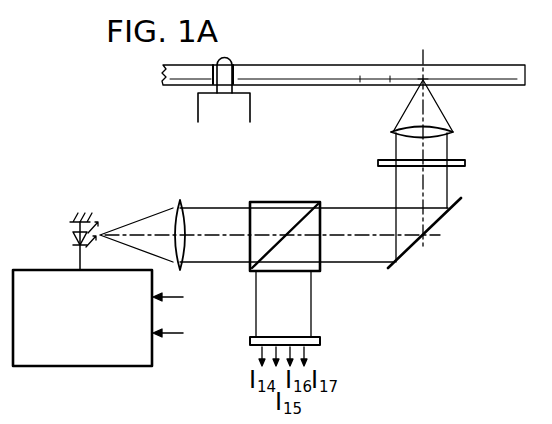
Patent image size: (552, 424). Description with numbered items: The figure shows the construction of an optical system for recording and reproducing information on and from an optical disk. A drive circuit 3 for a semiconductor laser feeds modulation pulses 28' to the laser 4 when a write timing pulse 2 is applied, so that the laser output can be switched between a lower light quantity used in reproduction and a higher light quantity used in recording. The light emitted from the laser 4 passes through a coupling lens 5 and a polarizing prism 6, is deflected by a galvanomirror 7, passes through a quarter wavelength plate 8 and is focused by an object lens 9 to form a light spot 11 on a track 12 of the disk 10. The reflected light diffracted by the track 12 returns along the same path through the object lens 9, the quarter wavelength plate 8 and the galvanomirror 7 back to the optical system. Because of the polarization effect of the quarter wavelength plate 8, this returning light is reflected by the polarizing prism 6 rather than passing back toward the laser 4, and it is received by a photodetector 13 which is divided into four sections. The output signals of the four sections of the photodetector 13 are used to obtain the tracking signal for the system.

The write timing pulse 2 is at (178, 332).
The drive circuit 3 is at (60, 270).
The laser 4 is at (72, 232).
The coupling lens 5 is at (178, 202).
The polarizing prism 6 is at (274, 202).
The galvanomirror 7 is at (447, 218).
The quarter wavelength plate 8 is at (466, 161).
The object lens 9 is at (454, 131).
The disk 10 is at (495, 65).
The light spot 11 is at (426, 82).
The track 12 is at (424, 80).
The photodetector 13 is at (318, 337).
The modulation pulses 28' is at (186, 297).